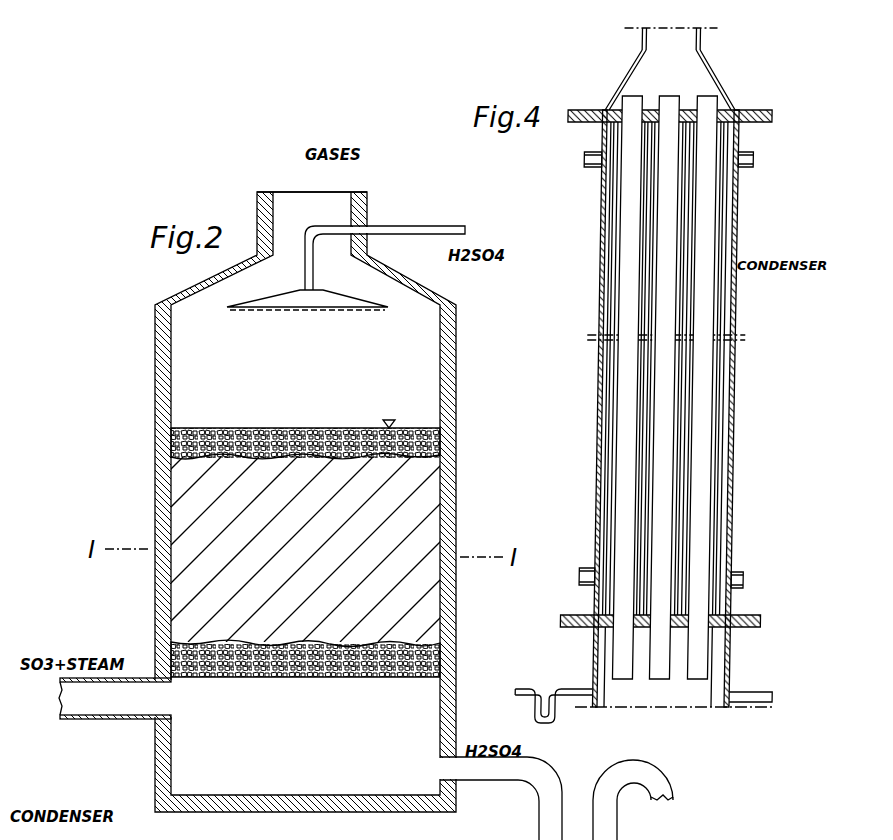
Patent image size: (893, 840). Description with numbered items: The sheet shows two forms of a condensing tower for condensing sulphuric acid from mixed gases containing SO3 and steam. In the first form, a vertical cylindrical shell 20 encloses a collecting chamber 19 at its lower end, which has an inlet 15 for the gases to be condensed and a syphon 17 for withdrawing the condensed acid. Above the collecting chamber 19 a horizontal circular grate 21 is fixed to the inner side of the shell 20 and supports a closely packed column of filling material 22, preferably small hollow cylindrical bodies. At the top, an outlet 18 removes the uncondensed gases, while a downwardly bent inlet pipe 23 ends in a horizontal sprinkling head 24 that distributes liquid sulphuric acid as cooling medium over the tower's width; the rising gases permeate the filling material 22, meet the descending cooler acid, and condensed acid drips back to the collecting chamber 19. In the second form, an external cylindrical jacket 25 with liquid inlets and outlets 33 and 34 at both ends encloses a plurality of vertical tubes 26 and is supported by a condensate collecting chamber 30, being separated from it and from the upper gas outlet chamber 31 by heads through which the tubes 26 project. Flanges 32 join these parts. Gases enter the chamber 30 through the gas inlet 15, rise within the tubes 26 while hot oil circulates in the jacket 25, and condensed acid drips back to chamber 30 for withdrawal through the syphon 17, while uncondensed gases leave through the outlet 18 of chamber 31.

In FIG. 2, the inlet 15 is at (85, 721).
In FIG. 4, the inlet 15 is at (771, 703).
In FIG. 2, the syphon 17 is at (520, 773).
In FIG. 4, the syphon 17 is at (560, 715).
In FIG. 2, the gas outlet 18 is at (340, 206).
In FIG. 4, the gas outlet 18 is at (657, 40).
In FIG. 2, the collecting chamber 19 is at (305, 736).
In FIG. 2, the vertical cylindrical shell 20 is at (154, 781).
In FIG. 2, the horizontal circular grate 21 is at (414, 680).
In FIG. 2, the filling material 22 is at (408, 497).
In FIG. 2, the inlet pipe 23 is at (425, 233).
In FIG. 2, the sprinkling head 24 is at (365, 313).
In FIG. 4, the cylindrical jacket 25 is at (736, 282).
In FIG. 4, the tubes 26 is at (705, 394).
In FIG. 4, the condensate collecting chamber 30 is at (658, 668).
In FIG. 4, the gas outlet chamber 31 is at (716, 70).
In FIG. 4, the flange 32 is at (578, 108).
In FIG. 4, the liquid inlet and outlet 33 is at (587, 579).
In FIG. 4, the liquid inlet and outlet 34 is at (594, 160).